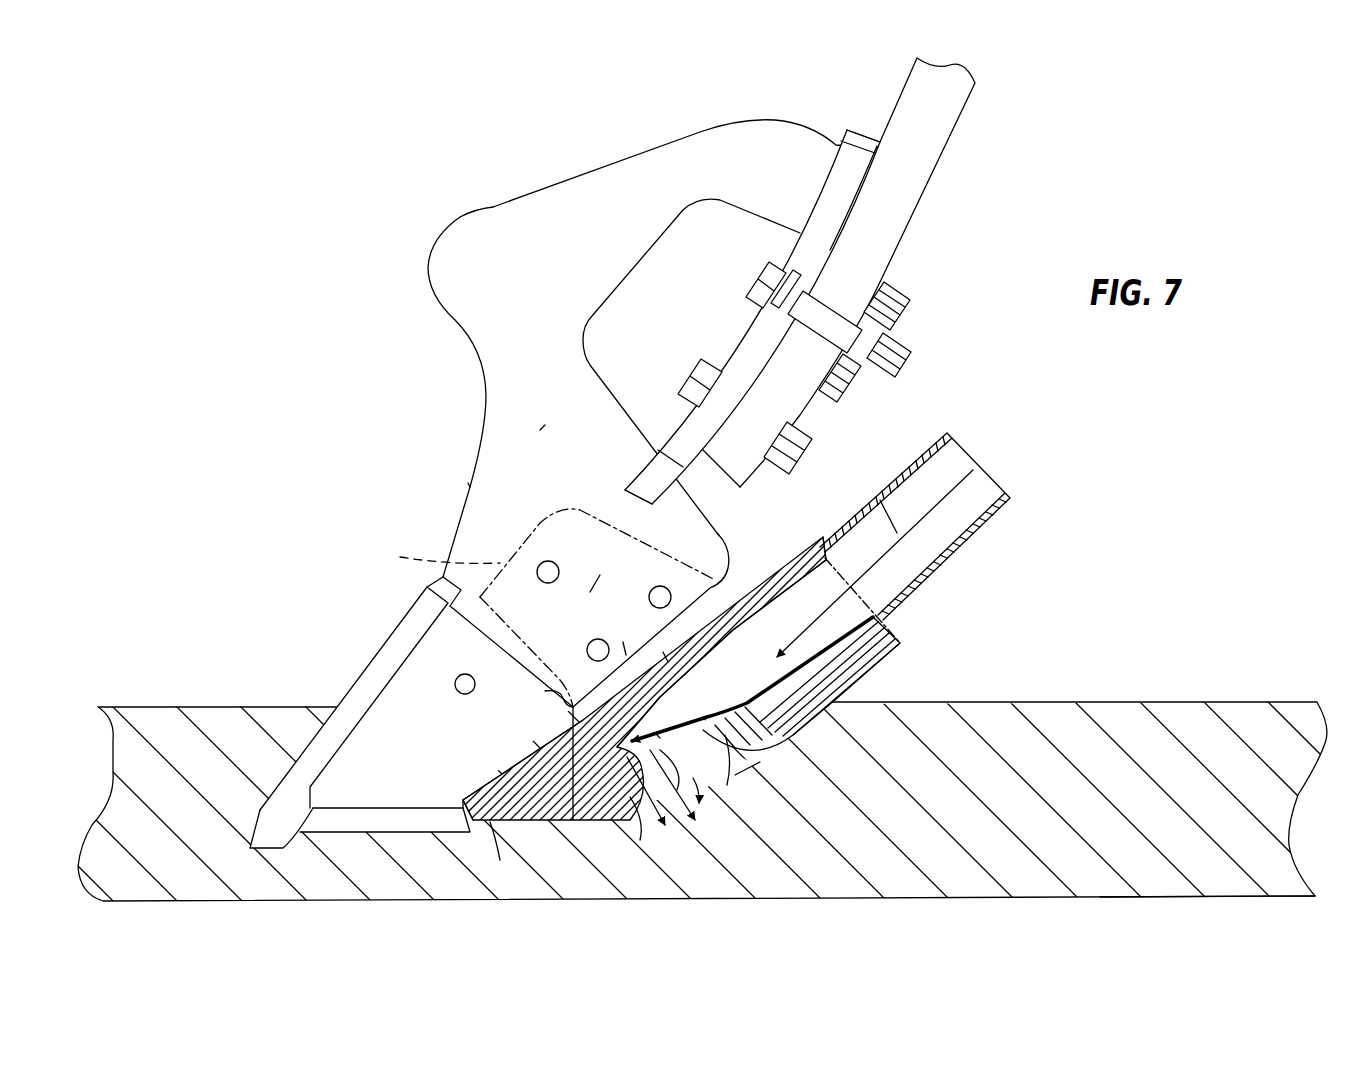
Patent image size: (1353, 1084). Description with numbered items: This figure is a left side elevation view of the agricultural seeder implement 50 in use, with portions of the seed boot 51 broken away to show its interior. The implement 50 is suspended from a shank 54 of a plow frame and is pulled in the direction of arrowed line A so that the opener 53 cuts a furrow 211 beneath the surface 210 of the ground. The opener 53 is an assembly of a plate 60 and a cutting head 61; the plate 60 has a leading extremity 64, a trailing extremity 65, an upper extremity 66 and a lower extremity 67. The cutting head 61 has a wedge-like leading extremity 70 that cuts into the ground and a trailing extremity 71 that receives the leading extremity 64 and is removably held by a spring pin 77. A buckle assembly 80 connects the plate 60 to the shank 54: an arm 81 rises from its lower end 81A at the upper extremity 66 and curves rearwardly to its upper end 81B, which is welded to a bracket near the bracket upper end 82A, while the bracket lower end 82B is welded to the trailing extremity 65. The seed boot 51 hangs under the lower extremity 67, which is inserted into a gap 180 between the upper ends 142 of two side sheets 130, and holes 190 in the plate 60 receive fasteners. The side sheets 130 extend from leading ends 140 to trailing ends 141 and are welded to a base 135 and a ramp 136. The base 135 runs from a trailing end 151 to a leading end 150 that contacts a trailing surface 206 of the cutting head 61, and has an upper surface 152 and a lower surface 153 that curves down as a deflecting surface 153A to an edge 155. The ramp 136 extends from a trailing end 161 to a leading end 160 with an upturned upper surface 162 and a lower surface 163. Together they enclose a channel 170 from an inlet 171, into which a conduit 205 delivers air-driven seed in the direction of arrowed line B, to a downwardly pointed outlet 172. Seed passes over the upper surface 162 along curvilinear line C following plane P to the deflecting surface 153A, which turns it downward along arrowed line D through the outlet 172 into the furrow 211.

The agricultural seeder implement 50 is at (576, 108).
The seed boot 51 is at (888, 667).
The opener 53 is at (466, 483).
The shank 54 is at (935, 150).
The plate 60 is at (480, 517).
The cutting head 61 is at (375, 665).
The leading extremity 64 is at (482, 762).
The trailing extremity 65 is at (717, 533).
The upper extremity 66 is at (512, 473).
The lower extremity 67 is at (623, 642).
The leading extremity 70 is at (275, 832).
The trailing extremity 71 is at (472, 640).
The spring pin 77 is at (455, 687).
The buckle assembly 80 is at (860, 128).
The arm 81 is at (623, 192).
The lower end 81A is at (507, 357).
The upper end 81B is at (823, 185).
The upper end 82A is at (846, 157).
The lower end 82B is at (645, 490).
The side sheets 130 is at (722, 578).
The base 135 is at (600, 820).
The ramp 136 is at (790, 727).
The leading end 140 is at (526, 654).
The trailing end 141 is at (820, 543).
The upper end 142 is at (435, 577).
The leading end 150 is at (465, 812).
The trailing end 151 is at (850, 520).
The upper surface 152 is at (663, 652).
The lower surface 153 is at (753, 618).
The deflecting surface 153A is at (752, 679).
The edge 155 is at (640, 840).
The leading end 160 is at (705, 800).
The trailing end 161 is at (897, 637).
The upper surface 162 is at (810, 660).
The lower surface 163 is at (827, 713).
The channel 170 is at (760, 663).
The inlet 171 is at (868, 577).
The outlet 172 is at (687, 802).
The gap 180 is at (590, 592).
The holes 190 is at (549, 560).
The conduit 205 is at (973, 531).
The trailing surface 206 is at (500, 860).
The surface 210 is at (150, 707).
The furrow 211 is at (940, 783).
The arrowed line A is at (200, 660).
The arrowed line B is at (897, 533).
The curvilinear line C is at (768, 787).
The arrowed line D is at (665, 816).
The plane P is at (726, 690).